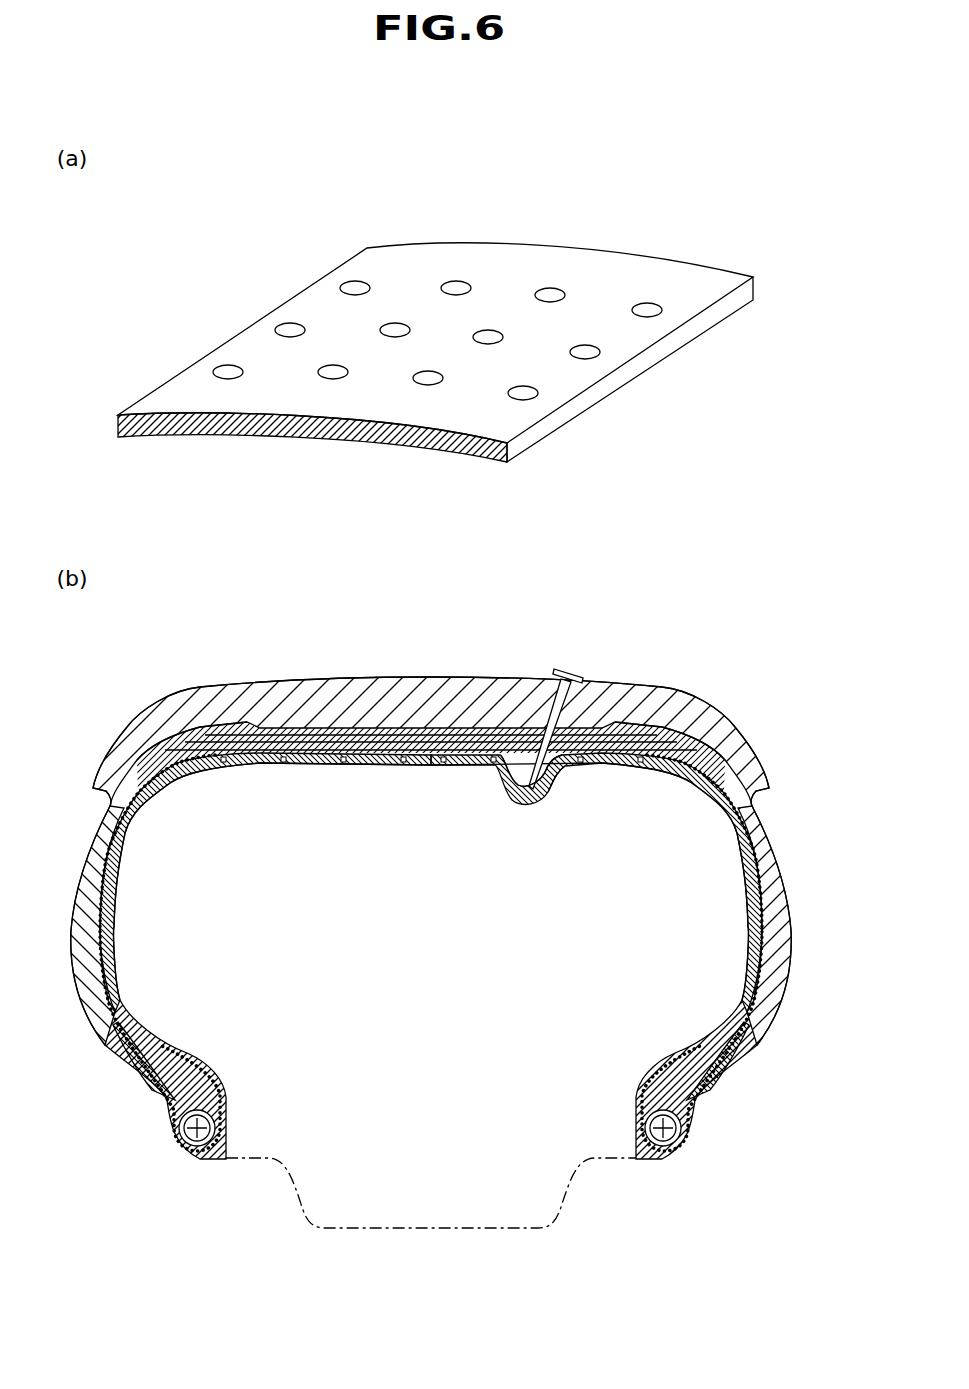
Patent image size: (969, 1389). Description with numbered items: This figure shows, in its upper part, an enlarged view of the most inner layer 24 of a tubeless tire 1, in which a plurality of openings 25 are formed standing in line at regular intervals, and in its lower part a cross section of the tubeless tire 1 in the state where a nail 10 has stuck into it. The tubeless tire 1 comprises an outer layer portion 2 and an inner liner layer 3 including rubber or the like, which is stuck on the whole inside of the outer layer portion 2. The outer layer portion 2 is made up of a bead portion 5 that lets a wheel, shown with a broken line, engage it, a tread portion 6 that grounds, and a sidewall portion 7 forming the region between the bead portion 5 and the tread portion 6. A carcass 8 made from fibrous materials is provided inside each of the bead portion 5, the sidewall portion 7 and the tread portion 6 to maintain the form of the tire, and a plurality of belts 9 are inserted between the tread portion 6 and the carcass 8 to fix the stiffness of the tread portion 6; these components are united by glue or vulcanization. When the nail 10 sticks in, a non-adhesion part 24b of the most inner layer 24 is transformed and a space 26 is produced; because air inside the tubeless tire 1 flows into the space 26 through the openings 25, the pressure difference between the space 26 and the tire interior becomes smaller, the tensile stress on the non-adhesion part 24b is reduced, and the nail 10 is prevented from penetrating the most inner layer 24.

The tubeless tire 1 is at (83, 843).
The outer layer portion 2 is at (779, 843).
The inner liner layer 3 is at (623, 1158).
The bead portion 5 is at (167, 1140).
The tread portion 6 is at (431, 678).
The sidewall portion 7 is at (78, 928).
The carcass 8 is at (170, 1098).
The belts 9 is at (363, 733).
The nail 10 is at (568, 672).
The most inner layer 24 is at (318, 310).
The non-adhesion part 24b is at (520, 801).
The openings 25 is at (550, 297).
The space 26 is at (580, 768).